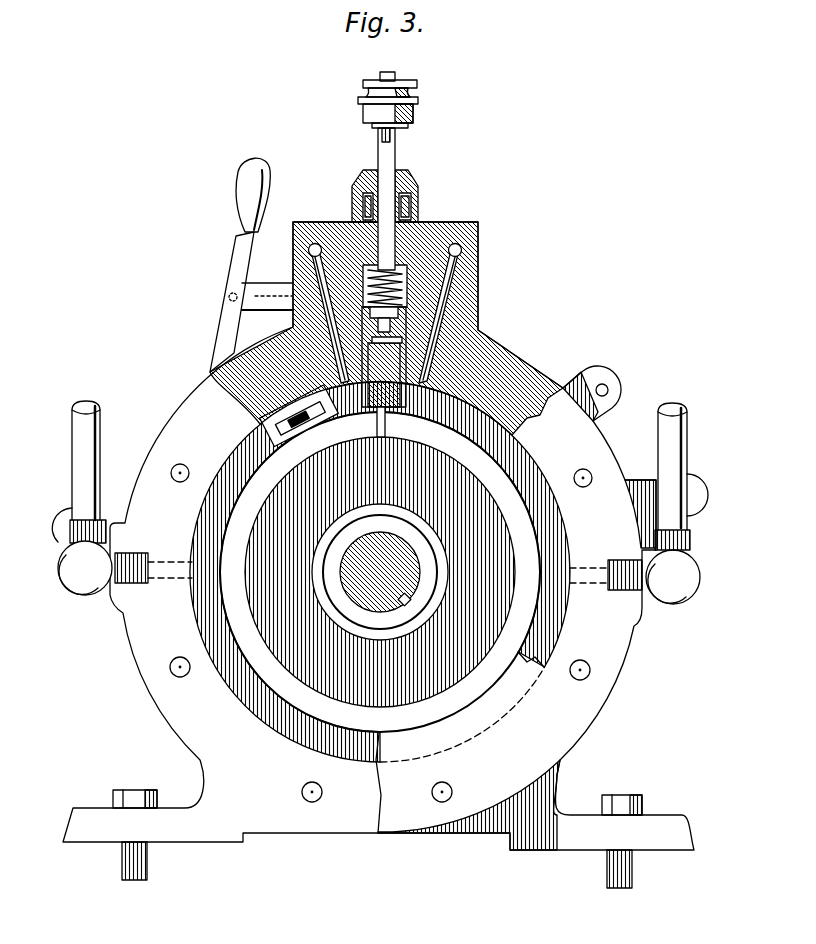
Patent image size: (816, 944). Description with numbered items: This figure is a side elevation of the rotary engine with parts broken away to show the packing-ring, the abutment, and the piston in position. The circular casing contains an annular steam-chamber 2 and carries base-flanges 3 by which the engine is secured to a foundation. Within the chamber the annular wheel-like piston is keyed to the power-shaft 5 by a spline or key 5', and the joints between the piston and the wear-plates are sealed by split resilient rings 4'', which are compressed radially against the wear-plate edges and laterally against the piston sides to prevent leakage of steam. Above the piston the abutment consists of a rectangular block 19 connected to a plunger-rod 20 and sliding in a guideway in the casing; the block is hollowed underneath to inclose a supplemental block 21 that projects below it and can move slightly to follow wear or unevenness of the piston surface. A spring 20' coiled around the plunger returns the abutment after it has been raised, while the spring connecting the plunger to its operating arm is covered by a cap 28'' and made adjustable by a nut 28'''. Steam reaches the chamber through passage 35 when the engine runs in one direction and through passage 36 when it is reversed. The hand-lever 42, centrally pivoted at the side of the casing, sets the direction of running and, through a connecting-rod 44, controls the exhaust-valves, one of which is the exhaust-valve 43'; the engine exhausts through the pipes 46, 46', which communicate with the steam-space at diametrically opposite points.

The annular steam-chamber 2 is at (512, 455).
The base-flanges 3 is at (377, 810).
The split resilient rings 4'' is at (380, 572).
The power-shaft 5 is at (340, 498).
The spline or key 5' is at (425, 615).
The rectangular block 19 is at (402, 333).
The plunger-rod 20 is at (402, 199).
The spring 20' is at (421, 250).
The supplemental block 21 is at (384, 372).
The cap 28'' is at (410, 107).
The nut 28''' is at (402, 72).
The passage 35 is at (450, 292).
The passage 36 is at (292, 268).
The hand-lever 42 is at (237, 232).
The exhaust-valve 43' is at (374, 573).
The connecting-rod 44 is at (113, 513).
The exhaust pipe 46 is at (687, 476).
The exhaust pipe 46' is at (62, 471).